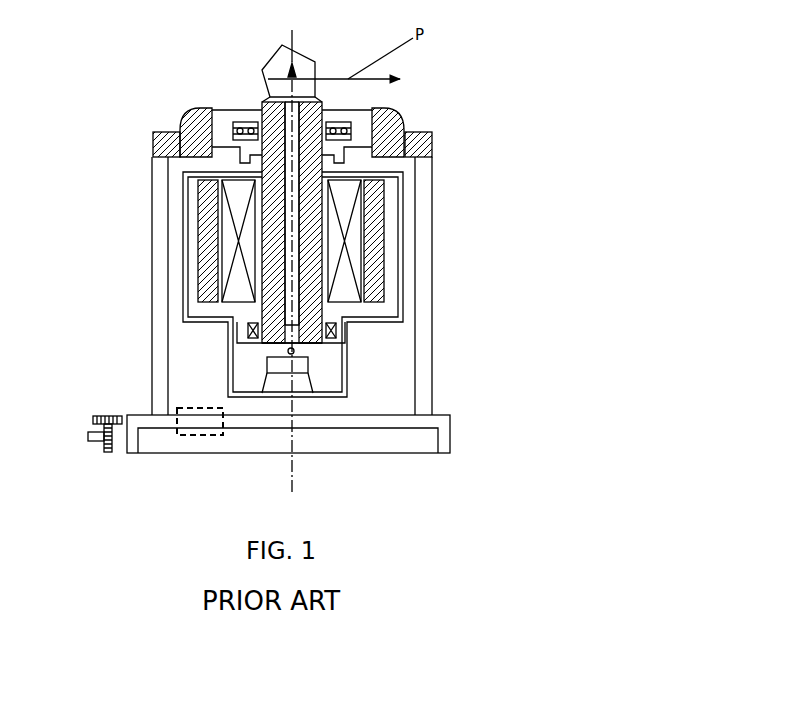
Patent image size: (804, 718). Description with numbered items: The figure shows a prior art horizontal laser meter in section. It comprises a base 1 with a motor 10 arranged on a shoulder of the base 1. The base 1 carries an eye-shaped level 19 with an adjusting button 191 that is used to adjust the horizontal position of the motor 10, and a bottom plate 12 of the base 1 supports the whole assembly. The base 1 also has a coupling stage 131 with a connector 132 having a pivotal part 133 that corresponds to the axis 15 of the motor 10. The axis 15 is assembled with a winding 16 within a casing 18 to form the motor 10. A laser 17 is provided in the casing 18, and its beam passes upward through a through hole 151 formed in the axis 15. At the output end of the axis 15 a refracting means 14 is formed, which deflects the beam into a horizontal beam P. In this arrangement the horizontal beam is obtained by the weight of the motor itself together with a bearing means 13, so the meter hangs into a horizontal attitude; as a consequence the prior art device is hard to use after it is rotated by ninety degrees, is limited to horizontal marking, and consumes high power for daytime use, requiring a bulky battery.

The base 1 is at (158, 270).
The motor 10 is at (180, 217).
The base 12 is at (128, 418).
The bearing means 13 is at (130, 149).
The coupling stage 131 is at (163, 132).
The connector 132 is at (237, 119).
The pivotal part 133 is at (373, 110).
The refracting means 14 is at (272, 73).
The axis 15 is at (313, 243).
The through hole 151 is at (290, 280).
The winding 16 is at (357, 227).
The laser 17 is at (303, 363).
The casing 18 is at (347, 365).
The eye-shaped level 19 is at (193, 433).
The adjusting button 191 is at (96, 421).